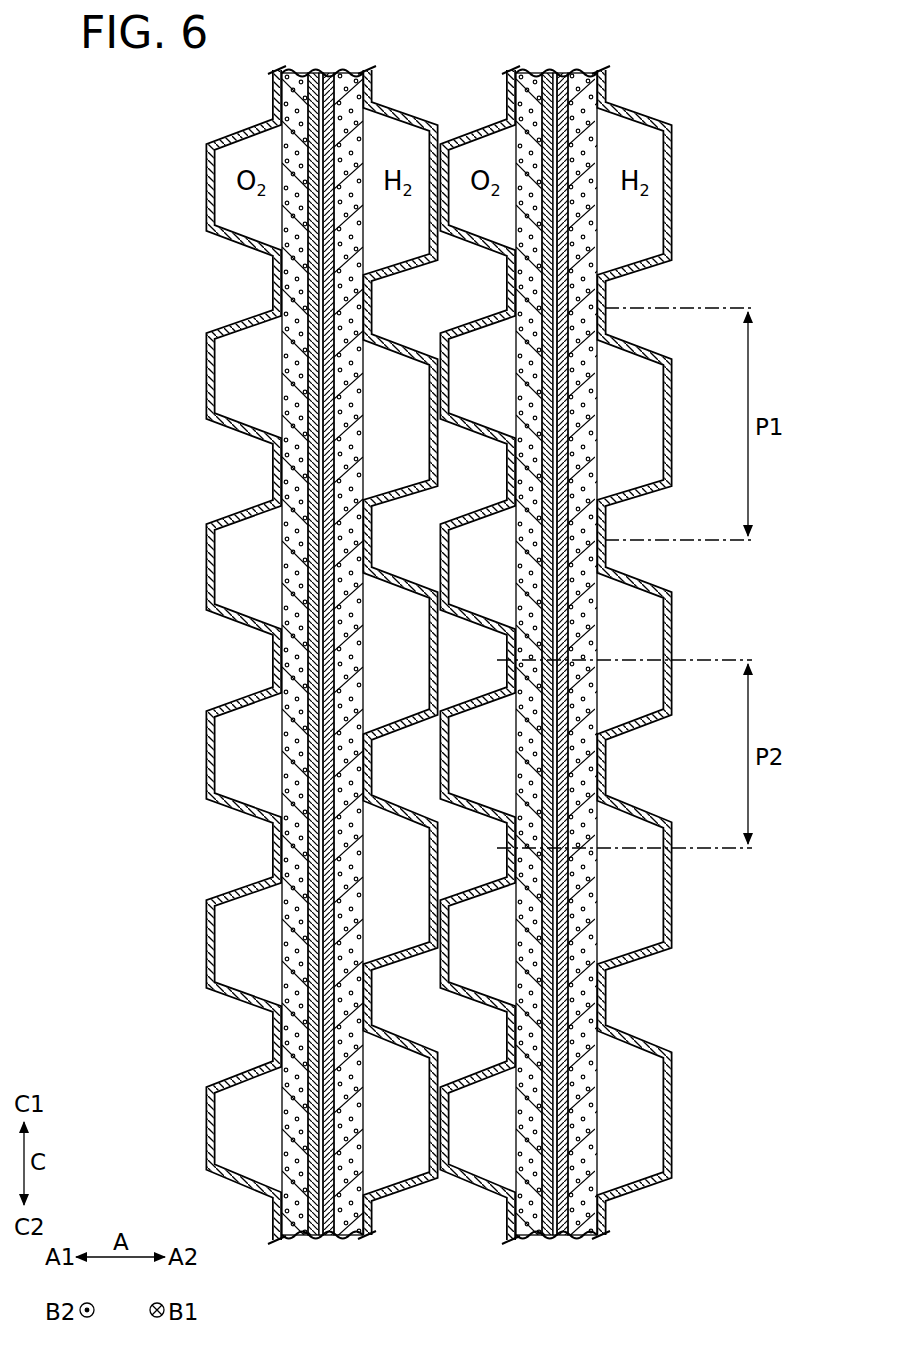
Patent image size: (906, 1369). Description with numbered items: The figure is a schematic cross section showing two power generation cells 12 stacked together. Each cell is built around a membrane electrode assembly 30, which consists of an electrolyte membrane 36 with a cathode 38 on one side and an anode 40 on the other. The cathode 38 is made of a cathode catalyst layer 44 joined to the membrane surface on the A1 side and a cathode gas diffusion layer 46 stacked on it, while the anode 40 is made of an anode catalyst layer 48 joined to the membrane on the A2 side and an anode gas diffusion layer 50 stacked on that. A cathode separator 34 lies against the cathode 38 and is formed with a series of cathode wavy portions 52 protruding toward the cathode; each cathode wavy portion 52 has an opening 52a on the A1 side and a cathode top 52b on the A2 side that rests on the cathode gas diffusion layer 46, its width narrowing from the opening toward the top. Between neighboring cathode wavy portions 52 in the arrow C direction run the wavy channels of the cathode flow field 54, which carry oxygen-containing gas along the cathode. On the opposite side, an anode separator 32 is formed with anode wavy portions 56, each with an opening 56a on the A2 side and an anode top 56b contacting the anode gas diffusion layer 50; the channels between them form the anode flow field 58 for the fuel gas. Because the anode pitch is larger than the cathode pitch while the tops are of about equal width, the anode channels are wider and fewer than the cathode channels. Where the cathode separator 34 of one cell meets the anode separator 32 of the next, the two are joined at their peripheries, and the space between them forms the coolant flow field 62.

The power generation cell 12 is at (441, 630).
The membrane electrode assembly 30 is at (441, 654).
The anode separator 32 is at (579, 657).
The cathode separator 34 is at (299, 655).
The electrolyte membrane 36 is at (322, 1095).
The cathode 38 is at (442, 654).
The anode 40 is at (442, 654).
The cathode catalyst layer 44 is at (313, 1043).
The cathode gas diffusion layer 46 is at (297, 1027).
The anode catalyst layer 48 is at (330, 1125).
The anode gas diffusion layer 50 is at (347, 1133).
The cathode wavy portion 52 is at (299, 655).
The opening 52a is at (320, 655).
The cathode top 52b is at (276, 272).
The cathode flow field 54 is at (320, 655).
The anode wavy portion 56 is at (579, 652).
The opening 56a is at (560, 652).
The anode top 56b is at (606, 292).
The anode flow field 58 is at (560, 652).
The coolant flow field 62 is at (408, 292).